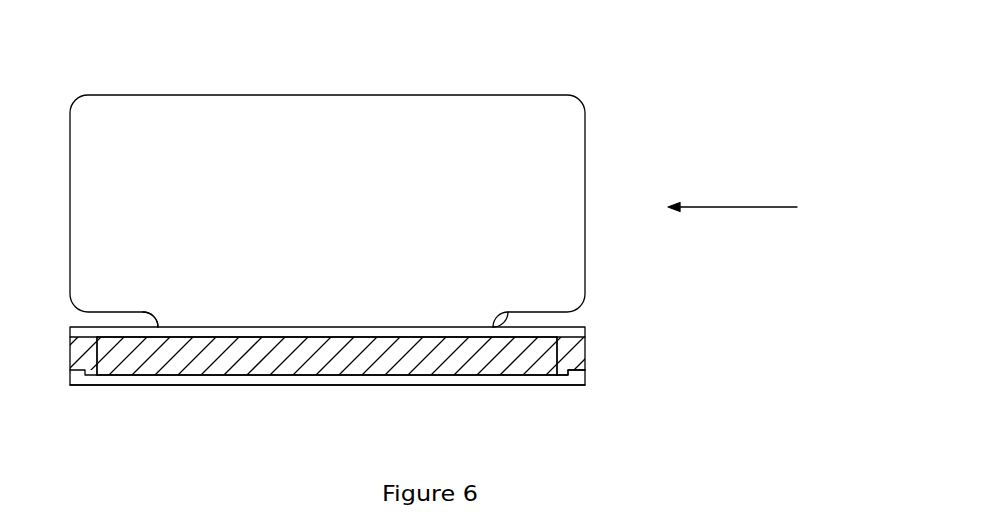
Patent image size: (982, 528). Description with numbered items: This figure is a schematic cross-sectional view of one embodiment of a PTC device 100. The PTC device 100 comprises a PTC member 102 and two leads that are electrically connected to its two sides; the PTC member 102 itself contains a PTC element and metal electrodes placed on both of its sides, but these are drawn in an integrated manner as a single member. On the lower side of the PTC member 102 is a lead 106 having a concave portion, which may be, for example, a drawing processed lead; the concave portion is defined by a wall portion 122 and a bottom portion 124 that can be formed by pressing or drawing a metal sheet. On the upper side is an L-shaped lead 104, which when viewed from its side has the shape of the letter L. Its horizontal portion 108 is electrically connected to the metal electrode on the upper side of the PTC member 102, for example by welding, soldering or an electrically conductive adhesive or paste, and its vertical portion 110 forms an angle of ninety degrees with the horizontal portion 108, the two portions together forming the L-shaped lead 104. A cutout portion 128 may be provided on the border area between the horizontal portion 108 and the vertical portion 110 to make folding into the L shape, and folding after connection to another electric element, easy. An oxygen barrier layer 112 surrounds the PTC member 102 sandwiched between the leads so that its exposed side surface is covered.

The PTC device 100 is at (637, 92).
The PTC member 102 is at (505, 358).
The L-shaped lead 104 is at (228, 327).
The lead having a concave portion 106 is at (333, 382).
The horizontal portion 108 is at (585, 332).
The vertical portion 110 is at (563, 248).
The oxygen barrier layer 112 is at (585, 353).
The wall portion 122 is at (577, 376).
The bottom portion 124 is at (213, 380).
The cutout portion 128 is at (122, 321).